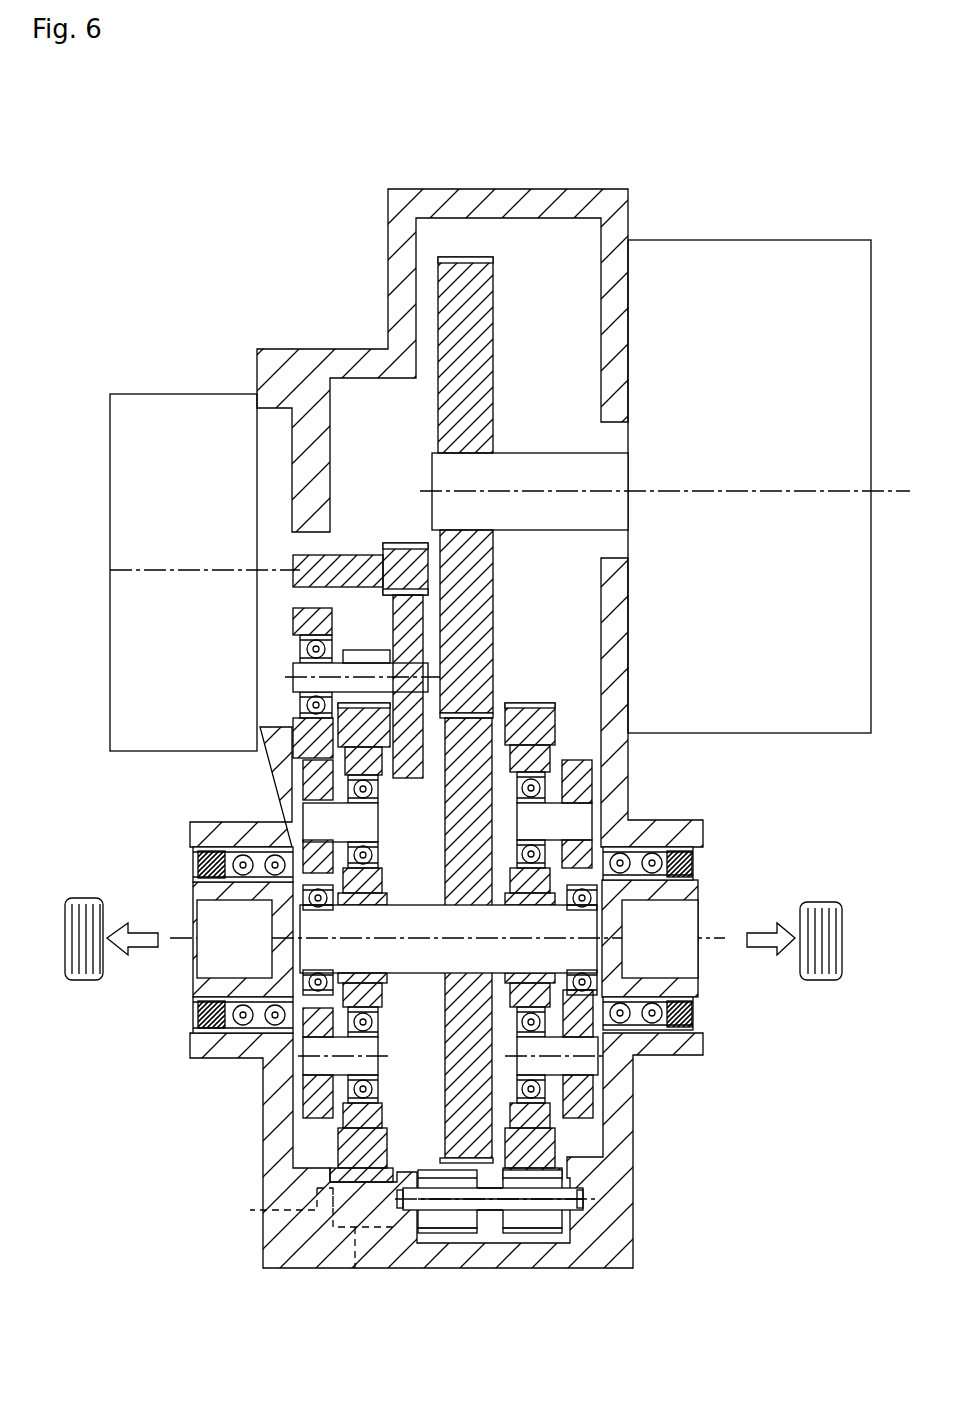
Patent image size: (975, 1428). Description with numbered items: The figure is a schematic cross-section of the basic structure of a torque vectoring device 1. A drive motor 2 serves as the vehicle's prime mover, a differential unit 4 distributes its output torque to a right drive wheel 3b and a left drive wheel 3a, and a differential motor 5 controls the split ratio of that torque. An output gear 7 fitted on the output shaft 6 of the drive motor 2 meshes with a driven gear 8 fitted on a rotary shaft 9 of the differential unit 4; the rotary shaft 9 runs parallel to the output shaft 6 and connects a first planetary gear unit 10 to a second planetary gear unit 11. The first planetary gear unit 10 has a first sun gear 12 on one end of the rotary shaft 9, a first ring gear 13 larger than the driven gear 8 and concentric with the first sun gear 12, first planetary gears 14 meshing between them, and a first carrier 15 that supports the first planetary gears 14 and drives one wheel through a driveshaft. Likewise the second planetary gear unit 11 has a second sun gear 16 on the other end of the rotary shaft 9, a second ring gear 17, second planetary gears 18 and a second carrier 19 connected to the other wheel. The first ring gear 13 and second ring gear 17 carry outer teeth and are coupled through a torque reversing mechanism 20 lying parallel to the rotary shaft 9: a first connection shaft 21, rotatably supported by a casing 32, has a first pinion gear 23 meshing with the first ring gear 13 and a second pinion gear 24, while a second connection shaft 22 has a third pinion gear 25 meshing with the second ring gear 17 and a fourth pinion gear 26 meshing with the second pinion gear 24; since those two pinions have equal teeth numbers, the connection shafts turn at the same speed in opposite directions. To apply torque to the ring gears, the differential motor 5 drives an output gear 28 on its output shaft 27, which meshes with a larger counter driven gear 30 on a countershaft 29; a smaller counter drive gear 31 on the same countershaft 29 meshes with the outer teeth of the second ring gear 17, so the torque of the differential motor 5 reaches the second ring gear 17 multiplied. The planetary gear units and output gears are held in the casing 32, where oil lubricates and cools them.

The torque vectoring device 1 is at (478, 306).
The drive motor 2 is at (781, 250).
The left drive wheel 3a is at (822, 900).
The right drive wheel 3b is at (92, 897).
The differential unit 4 is at (536, 1264).
The differential motor 5 is at (183, 405).
The output shaft 6 is at (557, 468).
The output gear 7 is at (483, 314).
The driven gear 8 is at (478, 730).
The rotary shaft 9 is at (407, 918).
The first planetary gear unit 10 is at (554, 897).
The second planetary gear unit 11 is at (446, 913).
The first sun gear 12 is at (438, 903).
The first ring gear 13 is at (530, 720).
The first planetary gears 14 is at (548, 760).
The first carrier 15 is at (580, 768).
The second sun gear 16 is at (388, 983).
The second ring gear 17 is at (372, 1150).
The second planetary gears 18 is at (378, 1110).
The second carrier 19 is at (312, 1100).
The torque reversing mechanism 20 is at (506, 1235).
The first connection shaft 21 is at (572, 1192).
The second connection shaft 22 is at (252, 1212).
The first pinion gear 23 is at (550, 1235).
The second pinion gear 24 is at (440, 1235).
The third pinion gear 25 is at (355, 1268).
The fourth pinion gear 26 is at (424, 1235).
The output shaft 27 is at (353, 572).
The output gear 28 is at (397, 572).
The countershaft 29 is at (336, 672).
The counter driven gear 30 is at (403, 768).
The counter drive gear 31 is at (375, 658).
The casing 32 is at (515, 205).